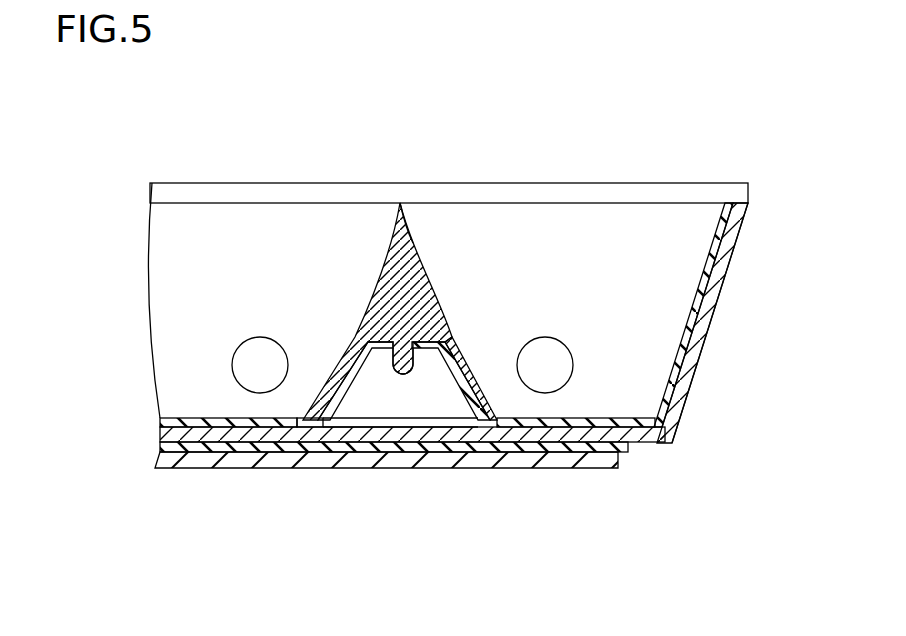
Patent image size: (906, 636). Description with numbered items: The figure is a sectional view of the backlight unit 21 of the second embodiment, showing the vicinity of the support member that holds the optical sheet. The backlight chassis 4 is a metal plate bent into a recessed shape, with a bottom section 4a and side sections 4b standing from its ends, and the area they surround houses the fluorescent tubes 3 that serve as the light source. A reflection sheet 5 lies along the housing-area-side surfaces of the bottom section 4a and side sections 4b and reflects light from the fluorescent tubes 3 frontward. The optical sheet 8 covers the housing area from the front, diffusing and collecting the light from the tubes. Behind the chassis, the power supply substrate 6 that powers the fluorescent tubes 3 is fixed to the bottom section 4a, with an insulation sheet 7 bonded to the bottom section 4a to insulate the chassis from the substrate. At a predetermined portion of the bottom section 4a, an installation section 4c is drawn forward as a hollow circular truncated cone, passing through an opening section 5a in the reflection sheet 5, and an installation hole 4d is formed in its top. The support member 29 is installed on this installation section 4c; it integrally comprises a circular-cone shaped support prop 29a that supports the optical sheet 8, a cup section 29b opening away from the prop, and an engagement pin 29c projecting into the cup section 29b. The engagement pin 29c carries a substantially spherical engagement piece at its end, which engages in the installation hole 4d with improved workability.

The backlight unit 21 is at (714, 152).
The optical sheet 8 is at (742, 194).
The support member 29 is at (381, 261).
The support prop 29a is at (413, 243).
The fluorescent tubes 3 is at (262, 337).
The installation hole 4d is at (388, 338).
The cup section 29b is at (465, 358).
The reflection sheet 5 is at (707, 286).
The backlight chassis 4 is at (698, 341).
The side sections 4b is at (688, 373).
The opening section 5a is at (303, 430).
The engagement pin 29c is at (391, 366).
The installation section 4c is at (456, 414).
The power supply substrate 6 is at (535, 456).
The insulation sheet 7 is at (575, 450).
The bottom section 4a is at (642, 440).